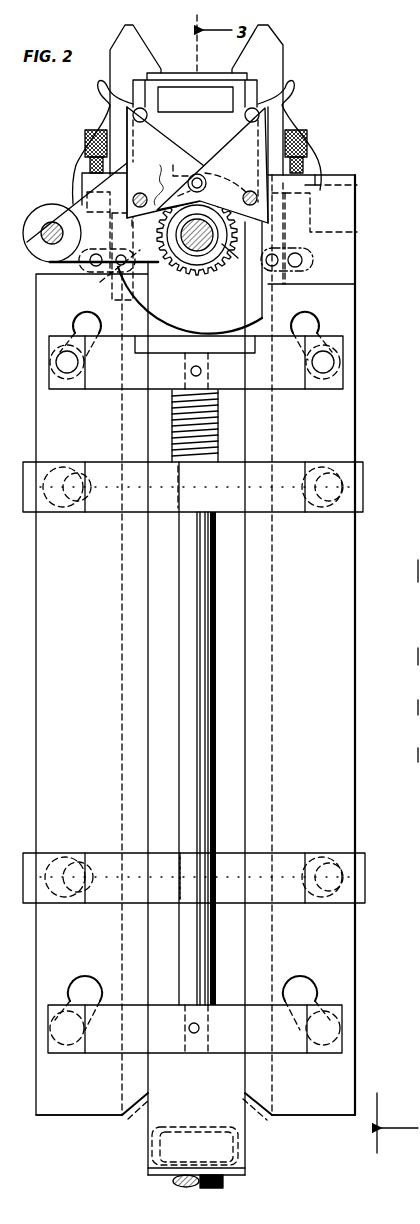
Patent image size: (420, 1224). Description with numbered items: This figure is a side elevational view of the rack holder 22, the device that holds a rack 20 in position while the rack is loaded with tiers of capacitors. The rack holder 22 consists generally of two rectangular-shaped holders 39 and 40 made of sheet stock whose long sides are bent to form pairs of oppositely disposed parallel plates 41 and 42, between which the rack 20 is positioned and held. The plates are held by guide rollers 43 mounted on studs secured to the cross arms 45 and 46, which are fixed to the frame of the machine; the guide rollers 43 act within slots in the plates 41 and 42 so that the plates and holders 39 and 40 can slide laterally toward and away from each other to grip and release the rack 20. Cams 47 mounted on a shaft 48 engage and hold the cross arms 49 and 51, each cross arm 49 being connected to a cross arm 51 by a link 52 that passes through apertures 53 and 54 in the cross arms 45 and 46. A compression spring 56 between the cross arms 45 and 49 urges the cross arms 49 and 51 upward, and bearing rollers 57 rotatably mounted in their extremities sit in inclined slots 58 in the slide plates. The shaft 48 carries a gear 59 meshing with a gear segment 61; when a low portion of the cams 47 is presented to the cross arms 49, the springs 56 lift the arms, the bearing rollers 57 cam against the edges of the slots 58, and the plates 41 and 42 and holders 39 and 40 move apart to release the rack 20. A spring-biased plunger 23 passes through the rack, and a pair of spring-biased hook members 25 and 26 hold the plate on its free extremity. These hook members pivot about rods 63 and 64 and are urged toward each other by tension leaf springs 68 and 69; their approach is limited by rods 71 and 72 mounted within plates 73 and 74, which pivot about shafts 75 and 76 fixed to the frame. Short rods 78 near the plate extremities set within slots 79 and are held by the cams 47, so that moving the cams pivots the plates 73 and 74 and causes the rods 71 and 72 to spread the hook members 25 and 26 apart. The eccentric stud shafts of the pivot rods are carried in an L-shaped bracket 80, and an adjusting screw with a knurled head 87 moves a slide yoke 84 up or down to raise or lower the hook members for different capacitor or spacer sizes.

The rack 20 is at (247, 1158).
The rack holder 22 is at (360, 413).
The spring-biased plunger 23 is at (170, 1182).
The hook member 25 is at (112, 63).
The hook member 26 is at (288, 62).
The holder 39 is at (137, 1117).
The holder 40 is at (267, 1123).
The plate 41 is at (65, 1108).
The plate 42 is at (333, 1111).
The guide roller 43 is at (62, 502).
The cross arm 45 is at (283, 513).
The cross arm 46 is at (288, 853).
The cam 47 is at (263, 318).
The shaft 48 is at (198, 245).
The cross arm 49 is at (273, 390).
The cross arm 51 is at (342, 1056).
The link 52 is at (190, 785).
The aperture 53 is at (182, 488).
The aperture 54 is at (181, 864).
The compression spring 56 is at (214, 440).
The bearing roller 57 is at (70, 384).
The inclined slot 58 is at (75, 326).
The gear 59 is at (228, 262).
The gear segment 61 is at (72, 197).
The rod 63 is at (112, 272).
The rod 64 is at (276, 275).
The tension leaf spring 68 is at (73, 152).
The tension leaf spring 69 is at (322, 154).
The rod 71 is at (136, 112).
The rod 72 is at (257, 113).
The plate 73 is at (127, 118).
The plate 74 is at (265, 128).
The shaft 75 is at (169, 162).
The shaft 76 is at (257, 200).
The short rod 78 is at (212, 165).
The slot 79 is at (197, 146).
The L-shaped bracket 80 is at (357, 185).
The slide yoke 84 is at (336, 233).
The knurled head 87 is at (84, 143).